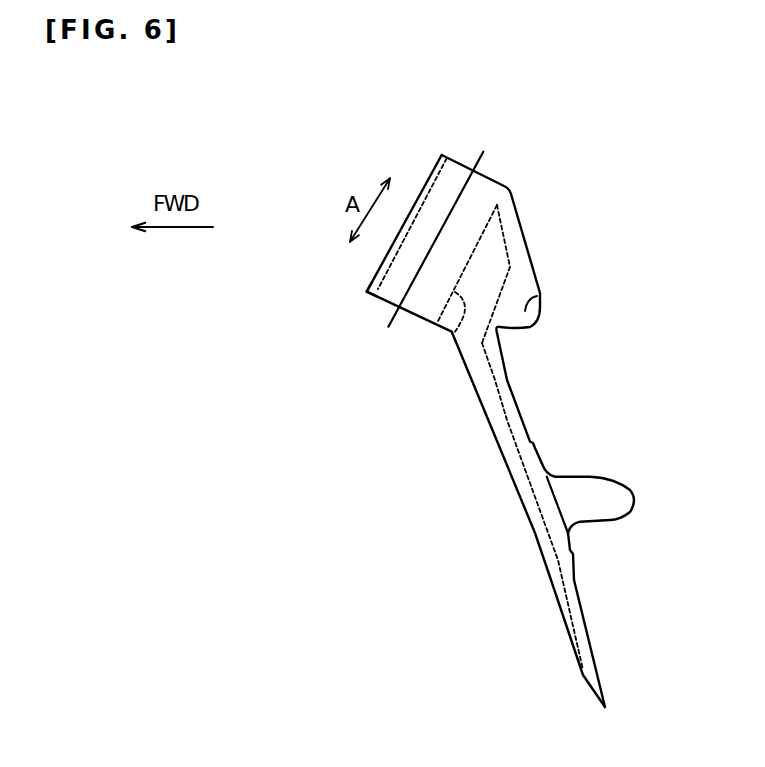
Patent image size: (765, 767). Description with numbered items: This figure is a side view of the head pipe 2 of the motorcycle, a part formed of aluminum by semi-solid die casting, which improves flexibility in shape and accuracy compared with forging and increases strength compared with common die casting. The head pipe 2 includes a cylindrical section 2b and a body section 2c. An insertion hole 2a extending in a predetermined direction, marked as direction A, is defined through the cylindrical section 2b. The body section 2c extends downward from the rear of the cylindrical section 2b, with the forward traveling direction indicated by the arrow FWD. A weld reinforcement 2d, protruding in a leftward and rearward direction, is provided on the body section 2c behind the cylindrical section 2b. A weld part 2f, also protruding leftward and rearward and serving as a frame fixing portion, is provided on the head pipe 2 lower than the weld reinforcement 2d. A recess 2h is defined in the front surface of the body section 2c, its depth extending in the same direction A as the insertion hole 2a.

The head pipe 2 is at (518, 247).
The insertion hole 2a is at (497, 205).
The cylindrical section 2b is at (367, 292).
The body section 2c is at (517, 410).
The weld reinforcement 2d is at (540, 294).
The weld part 2f is at (595, 495).
The recess 2h is at (455, 332).